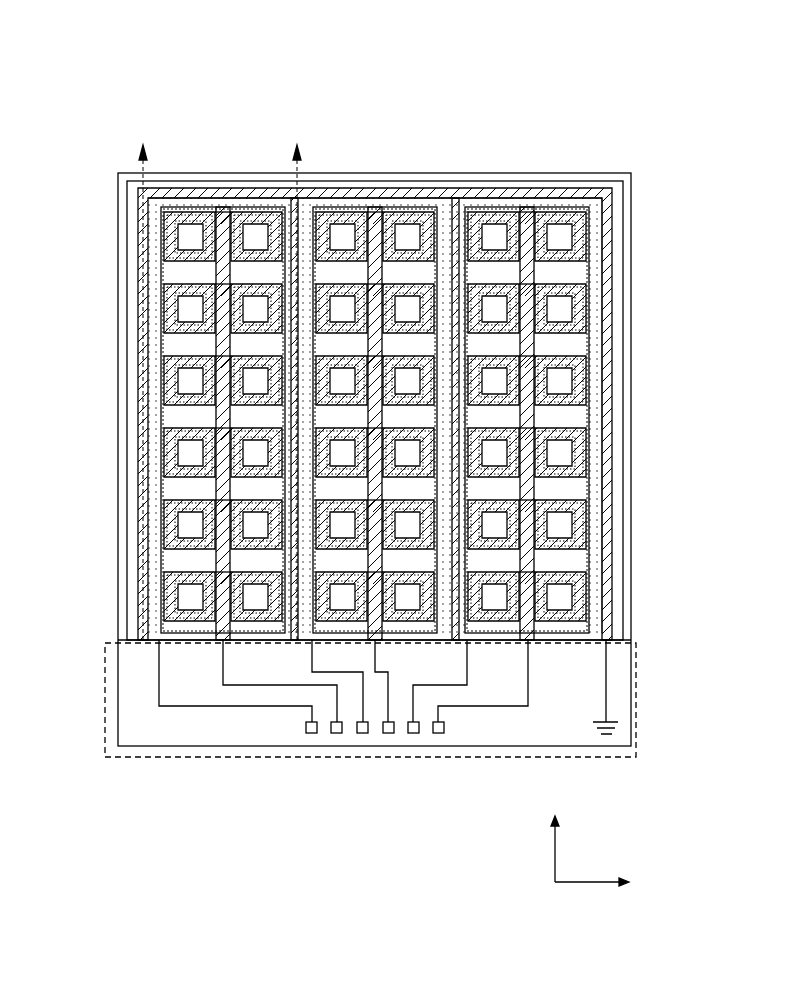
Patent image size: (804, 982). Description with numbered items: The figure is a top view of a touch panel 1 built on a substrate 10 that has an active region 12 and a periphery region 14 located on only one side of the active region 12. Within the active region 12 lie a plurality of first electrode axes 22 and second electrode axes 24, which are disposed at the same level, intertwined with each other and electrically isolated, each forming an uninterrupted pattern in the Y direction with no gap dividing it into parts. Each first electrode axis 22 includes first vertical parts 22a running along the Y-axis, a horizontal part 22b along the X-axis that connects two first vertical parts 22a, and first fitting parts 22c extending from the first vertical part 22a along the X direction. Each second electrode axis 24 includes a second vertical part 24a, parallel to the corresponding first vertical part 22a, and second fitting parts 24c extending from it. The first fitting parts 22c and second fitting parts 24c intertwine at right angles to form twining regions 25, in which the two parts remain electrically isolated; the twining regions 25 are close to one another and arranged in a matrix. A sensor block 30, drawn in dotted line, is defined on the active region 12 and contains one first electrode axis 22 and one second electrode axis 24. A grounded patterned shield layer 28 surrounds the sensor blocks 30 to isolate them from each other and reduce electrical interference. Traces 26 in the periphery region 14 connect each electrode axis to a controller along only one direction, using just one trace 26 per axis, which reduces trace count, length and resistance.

The touch panel 1 is at (588, 49).
The substrate 10 is at (121, 174).
The active region 12 is at (348, 180).
The periphery region 14 is at (609, 757).
The first electrode axis 22 is at (338, 363).
The first vertical part 22a is at (443, 197).
The horizontal part 22b is at (420, 127).
The first fitting part 22c is at (567, 197).
The second electrode axis 24 is at (394, 423).
The second vertical part 24a is at (672, 390).
The second fitting part 24c is at (178, 306).
The twining region 25 is at (167, 258).
The trace 26 is at (198, 708).
The patterned shield layer 28 is at (142, 368).
The sensor block 30 is at (230, 195).